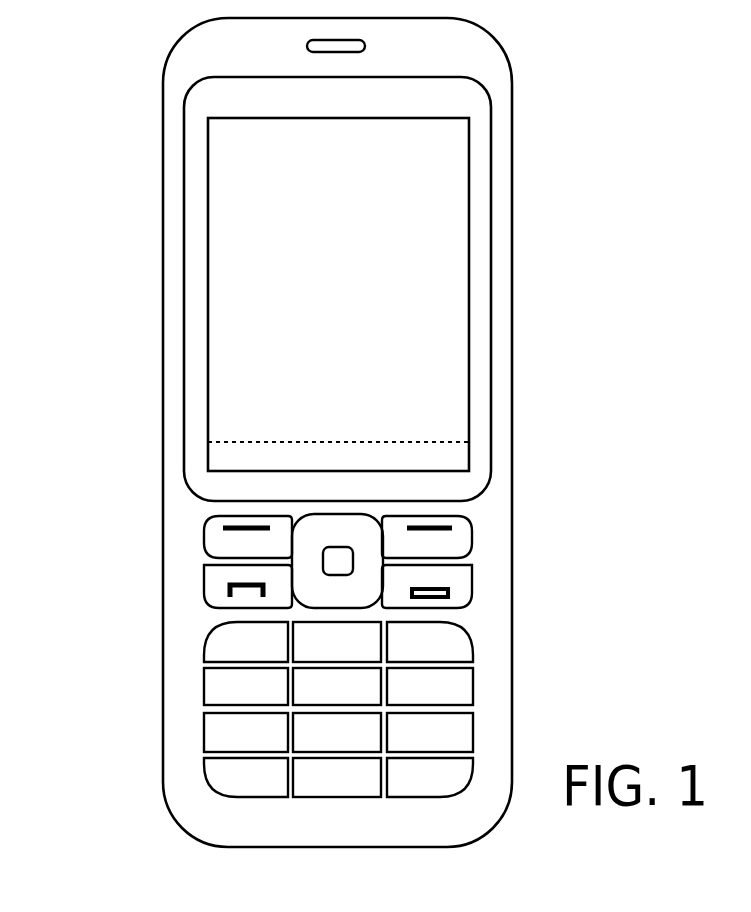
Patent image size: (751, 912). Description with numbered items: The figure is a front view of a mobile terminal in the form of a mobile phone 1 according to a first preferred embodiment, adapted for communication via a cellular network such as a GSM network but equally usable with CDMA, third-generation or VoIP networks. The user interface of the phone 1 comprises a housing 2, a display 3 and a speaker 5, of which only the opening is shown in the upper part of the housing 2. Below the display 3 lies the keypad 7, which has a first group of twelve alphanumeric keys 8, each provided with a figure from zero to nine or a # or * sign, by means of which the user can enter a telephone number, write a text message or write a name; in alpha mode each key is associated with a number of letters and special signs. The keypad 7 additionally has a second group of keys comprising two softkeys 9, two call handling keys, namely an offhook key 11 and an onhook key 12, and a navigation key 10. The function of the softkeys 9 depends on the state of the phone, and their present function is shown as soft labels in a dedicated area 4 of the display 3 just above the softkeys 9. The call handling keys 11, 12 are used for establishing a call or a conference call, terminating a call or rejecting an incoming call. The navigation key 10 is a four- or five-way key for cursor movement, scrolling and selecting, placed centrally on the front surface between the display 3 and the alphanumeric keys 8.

The mobile phone 1 is at (593, 128).
The housing 2 is at (513, 130).
The display 3 is at (452, 291).
The dedicated area 4 is at (458, 454).
The speaker 5 is at (334, 44).
The keypad 7 is at (284, 766).
The alphanumeric keys 8 is at (325, 855).
The softkeys 9 is at (215, 533).
The navigation key 10 is at (347, 527).
The offhook key 11 is at (215, 594).
The onhook key 12 is at (465, 590).